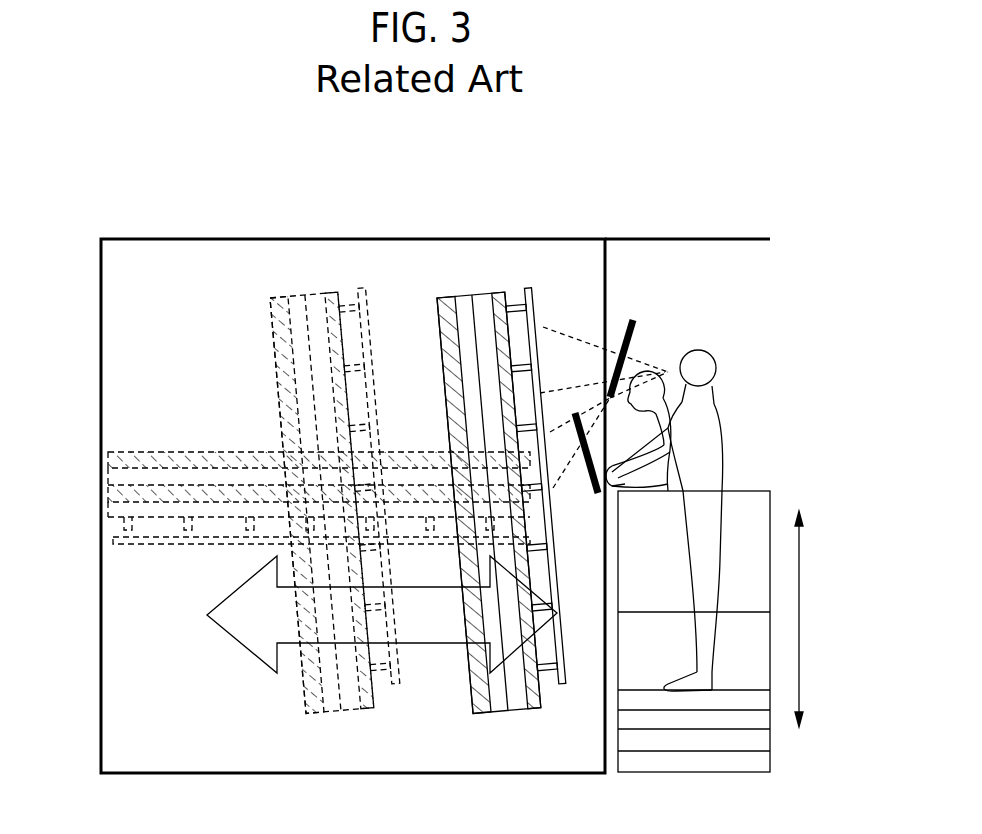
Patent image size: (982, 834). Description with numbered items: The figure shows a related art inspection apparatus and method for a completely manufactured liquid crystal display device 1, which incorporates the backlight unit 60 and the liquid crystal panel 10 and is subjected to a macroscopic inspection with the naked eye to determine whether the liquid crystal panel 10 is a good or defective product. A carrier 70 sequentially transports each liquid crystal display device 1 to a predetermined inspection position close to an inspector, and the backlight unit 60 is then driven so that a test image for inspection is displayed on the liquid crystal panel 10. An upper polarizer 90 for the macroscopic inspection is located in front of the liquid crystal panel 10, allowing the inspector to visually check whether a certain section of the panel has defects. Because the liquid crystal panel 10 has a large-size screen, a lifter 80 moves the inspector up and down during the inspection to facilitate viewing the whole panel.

The liquid crystal display device 1 is at (533, 275).
The liquid crystal panel 10 is at (497, 296).
The backlight unit 60 is at (274, 305).
The carrier 70 is at (137, 540).
The lifter 80 is at (770, 760).
The upper polarizer 90 is at (636, 324).